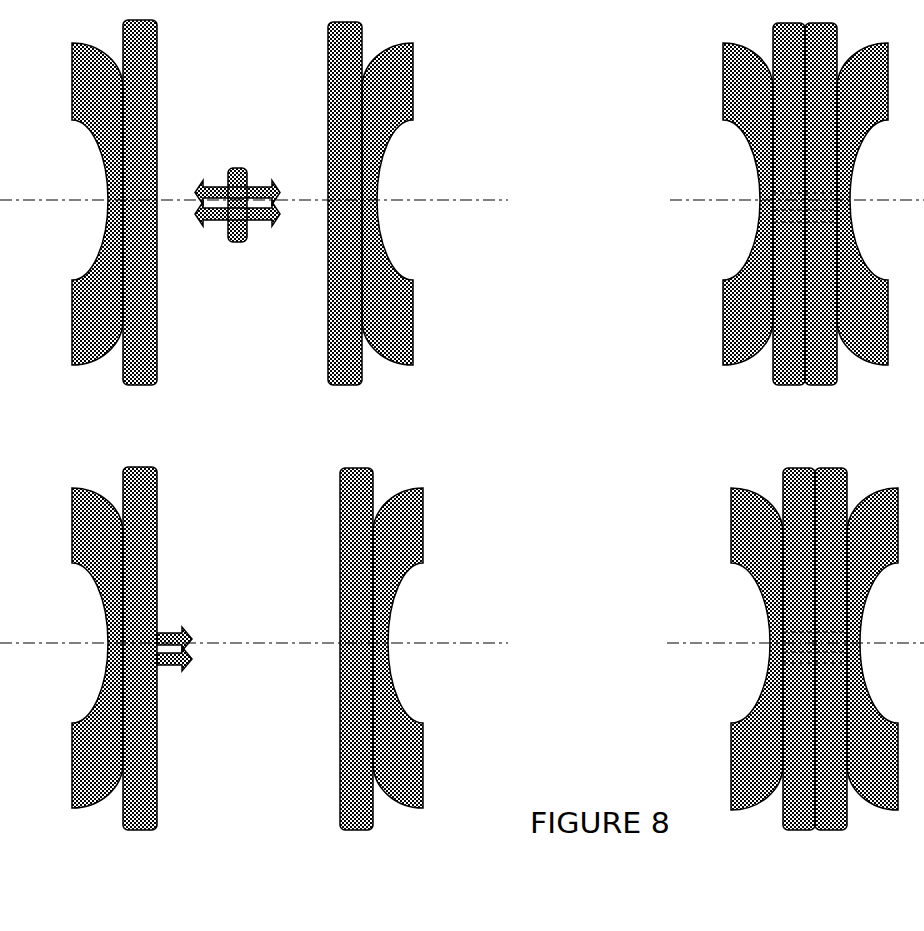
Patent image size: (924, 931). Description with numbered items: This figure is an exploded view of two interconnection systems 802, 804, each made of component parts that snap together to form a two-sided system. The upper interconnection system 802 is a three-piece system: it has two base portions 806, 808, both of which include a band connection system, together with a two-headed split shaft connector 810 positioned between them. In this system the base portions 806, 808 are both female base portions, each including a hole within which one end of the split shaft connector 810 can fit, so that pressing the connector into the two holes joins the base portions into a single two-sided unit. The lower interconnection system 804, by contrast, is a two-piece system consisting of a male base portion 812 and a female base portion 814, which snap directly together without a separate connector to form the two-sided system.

The interconnection system 802 is at (610, 218).
The interconnection system 804 is at (610, 661).
The base portion 806 is at (167, 305).
The base portion 808 is at (320, 232).
The two-headed split shaft connector 810 is at (245, 157).
The male base portion 812 is at (167, 582).
The female base portion 814 is at (328, 677).